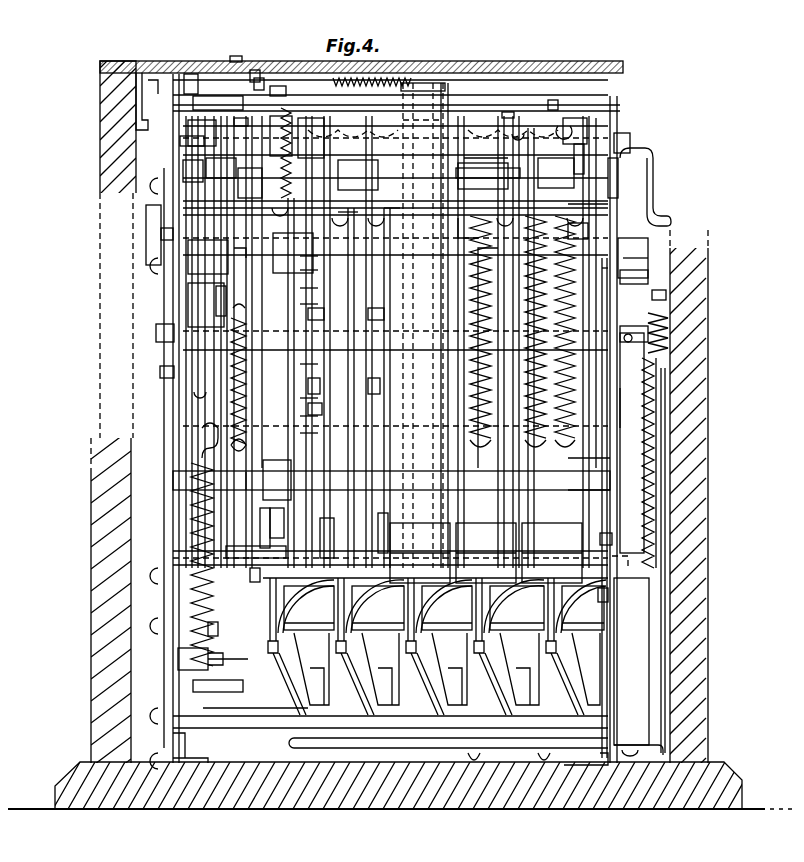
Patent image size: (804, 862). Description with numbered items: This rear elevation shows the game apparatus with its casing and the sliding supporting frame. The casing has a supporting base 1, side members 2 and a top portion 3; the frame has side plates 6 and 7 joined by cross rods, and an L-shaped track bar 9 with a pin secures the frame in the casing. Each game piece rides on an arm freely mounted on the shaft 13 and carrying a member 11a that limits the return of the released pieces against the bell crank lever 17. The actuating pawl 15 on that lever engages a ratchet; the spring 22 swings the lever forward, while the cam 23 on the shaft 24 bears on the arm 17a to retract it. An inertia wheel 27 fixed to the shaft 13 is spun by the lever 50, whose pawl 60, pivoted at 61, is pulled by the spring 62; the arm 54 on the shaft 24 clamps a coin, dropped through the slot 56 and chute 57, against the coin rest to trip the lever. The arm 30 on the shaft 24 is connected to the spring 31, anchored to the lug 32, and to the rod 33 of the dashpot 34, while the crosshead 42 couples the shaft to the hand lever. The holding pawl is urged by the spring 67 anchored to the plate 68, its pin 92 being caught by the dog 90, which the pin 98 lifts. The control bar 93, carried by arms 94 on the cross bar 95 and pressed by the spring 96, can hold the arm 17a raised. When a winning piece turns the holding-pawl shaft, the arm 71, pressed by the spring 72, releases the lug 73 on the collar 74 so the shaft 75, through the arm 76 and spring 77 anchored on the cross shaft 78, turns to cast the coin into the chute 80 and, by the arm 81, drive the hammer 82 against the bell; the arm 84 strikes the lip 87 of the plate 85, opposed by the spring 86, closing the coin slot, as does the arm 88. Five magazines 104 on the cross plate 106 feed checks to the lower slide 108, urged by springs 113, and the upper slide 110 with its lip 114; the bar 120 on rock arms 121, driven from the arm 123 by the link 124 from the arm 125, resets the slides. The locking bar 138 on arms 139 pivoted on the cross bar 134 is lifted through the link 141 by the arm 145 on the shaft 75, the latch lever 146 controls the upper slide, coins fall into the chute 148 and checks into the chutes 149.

The supporting base 1 is at (310, 794).
The side members 2 is at (90, 600).
The top portion 3 is at (140, 53).
The side plate 6 is at (165, 366).
The side plate 7 is at (612, 404).
The L-shaped track bar 9 is at (182, 756).
The member 11a is at (330, 540).
The shaft 13 is at (300, 358).
The actuating pawl 15 is at (300, 410).
The bell crank lever 17 is at (300, 392).
The arm of bell crank lever 17a is at (476, 166).
The spring 22 is at (575, 362).
The cam 23 is at (298, 264).
The shaft 24 is at (300, 250).
The inertia wheel 27 is at (300, 427).
The arm 30 is at (632, 266).
The spring 31 is at (662, 330).
The lug 32 is at (612, 556).
The rod 33 is at (660, 288).
The dashpot 34 is at (628, 640).
The crosshead 42 is at (146, 232).
The lever 50 is at (192, 392).
The arm 54 is at (210, 172).
The slot 56 is at (228, 52).
The chute 57 is at (182, 80).
The pawl 60 is at (216, 286).
The pivot 61 is at (236, 374).
The spring 62 is at (200, 644).
The spring 67 is at (510, 130).
The plate 68 is at (468, 150).
The arm 71 is at (272, 84).
The spring 72 is at (320, 122).
The lug 73 is at (228, 116).
The collar 74 is at (192, 136).
The shaft 75 is at (548, 96).
The arm 76 is at (572, 140).
The spring 77 is at (565, 200).
The cross shaft 78 is at (248, 470).
The chute 80 is at (206, 318).
The arm 81 is at (625, 182).
The hammer 82 is at (634, 158).
The arm 84 is at (252, 72).
The plate 85 is at (194, 90).
The spring 86 is at (388, 74).
The depending lip 87 is at (270, 96).
The arm 88 is at (248, 66).
The dog 90 is at (338, 204).
The pin 92 is at (300, 298).
The control bar 93 is at (384, 200).
The arms 94 is at (556, 122).
The cross bar 95 is at (500, 106).
The spring 96 is at (224, 424).
The pin 98 is at (300, 282).
The magazines 104 is at (422, 112).
The cross plate 106 is at (234, 550).
The lower slide 108 is at (350, 578).
The upper slide 110 is at (398, 528).
The springs 113 is at (418, 578).
The upstanding lip 114 is at (440, 530).
The bar 120 is at (284, 578).
The rock arms 121 is at (598, 592).
The arm 123 is at (595, 482).
The link 124 is at (600, 450).
The arm 125 is at (622, 262).
The cross bar 134 is at (248, 572).
The locking bar 138 is at (270, 512).
The arms 139 is at (600, 532).
The link 141 is at (622, 432).
The arm 145 is at (620, 140).
The latch lever 146 is at (378, 522).
The chute 148 is at (212, 690).
The chutes 149 is at (512, 768).